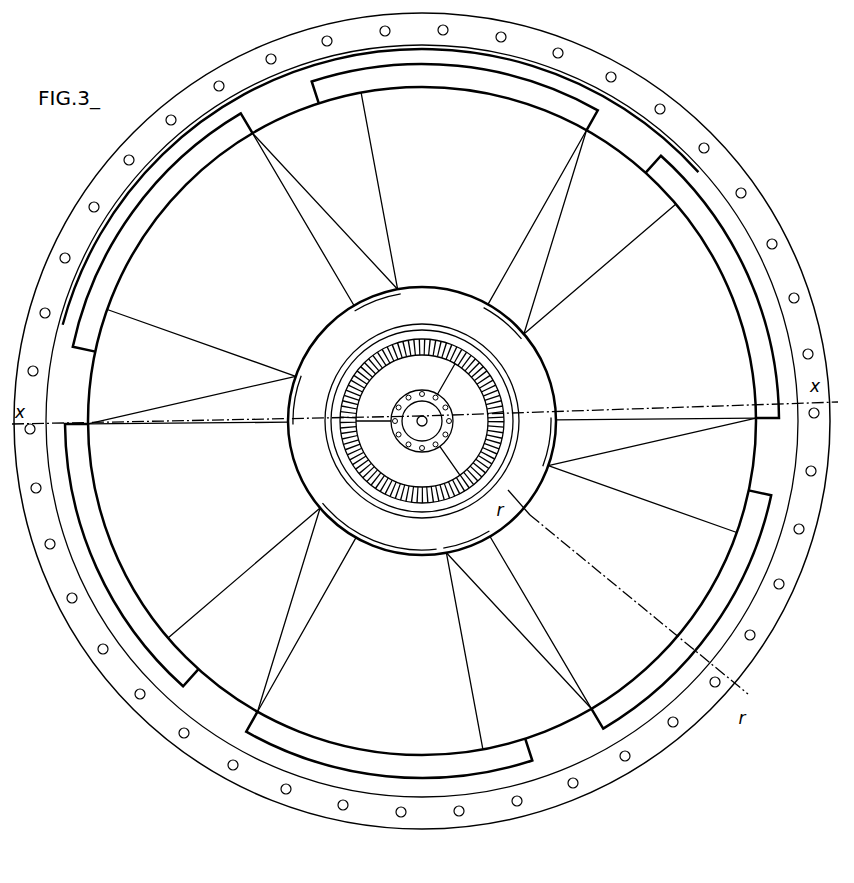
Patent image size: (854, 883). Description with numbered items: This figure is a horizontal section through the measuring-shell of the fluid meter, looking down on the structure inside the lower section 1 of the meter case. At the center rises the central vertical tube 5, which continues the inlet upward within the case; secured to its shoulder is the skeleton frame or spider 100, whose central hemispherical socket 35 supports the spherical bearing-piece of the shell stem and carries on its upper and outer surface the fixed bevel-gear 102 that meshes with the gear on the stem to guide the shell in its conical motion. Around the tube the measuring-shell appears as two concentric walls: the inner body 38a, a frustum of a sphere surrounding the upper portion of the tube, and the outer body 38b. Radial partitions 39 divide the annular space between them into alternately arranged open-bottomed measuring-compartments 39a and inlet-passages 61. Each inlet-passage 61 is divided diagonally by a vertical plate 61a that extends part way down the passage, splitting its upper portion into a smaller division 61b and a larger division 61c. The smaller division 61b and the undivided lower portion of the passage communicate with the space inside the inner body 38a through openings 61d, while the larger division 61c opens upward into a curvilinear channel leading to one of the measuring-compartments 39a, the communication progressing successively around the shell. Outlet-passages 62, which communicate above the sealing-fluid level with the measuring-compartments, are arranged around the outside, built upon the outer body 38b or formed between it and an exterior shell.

The lower section 1 is at (478, 818).
The central vertical tube 5 is at (518, 407).
The central hemispherical socket 35 is at (449, 427).
The inner body 38a is at (418, 421).
The outer body 38b is at (175, 193).
The radial partitions 39 is at (295, 213).
The measuring-compartments 39a is at (426, 403).
The inlet-passages 61 is at (422, 420).
The vertical plate 61a is at (208, 400).
The smaller division 61b is at (429, 418).
The larger division 61c is at (432, 430).
The openings 61d is at (369, 300).
The outlet-passages 62 is at (422, 421).
The skeleton frame or spider 100 is at (457, 470).
The bevel-gear 102 is at (357, 472).